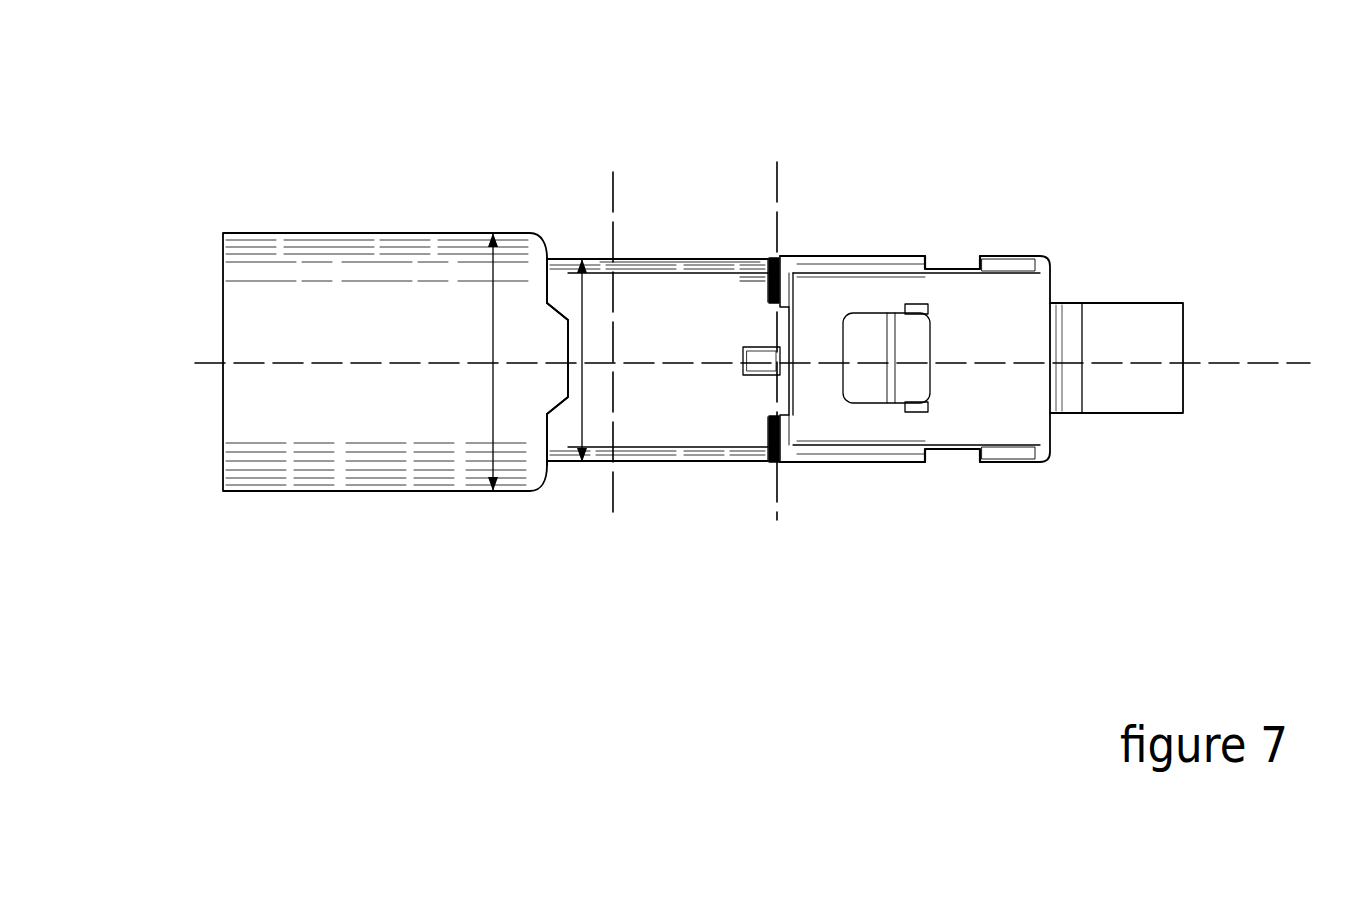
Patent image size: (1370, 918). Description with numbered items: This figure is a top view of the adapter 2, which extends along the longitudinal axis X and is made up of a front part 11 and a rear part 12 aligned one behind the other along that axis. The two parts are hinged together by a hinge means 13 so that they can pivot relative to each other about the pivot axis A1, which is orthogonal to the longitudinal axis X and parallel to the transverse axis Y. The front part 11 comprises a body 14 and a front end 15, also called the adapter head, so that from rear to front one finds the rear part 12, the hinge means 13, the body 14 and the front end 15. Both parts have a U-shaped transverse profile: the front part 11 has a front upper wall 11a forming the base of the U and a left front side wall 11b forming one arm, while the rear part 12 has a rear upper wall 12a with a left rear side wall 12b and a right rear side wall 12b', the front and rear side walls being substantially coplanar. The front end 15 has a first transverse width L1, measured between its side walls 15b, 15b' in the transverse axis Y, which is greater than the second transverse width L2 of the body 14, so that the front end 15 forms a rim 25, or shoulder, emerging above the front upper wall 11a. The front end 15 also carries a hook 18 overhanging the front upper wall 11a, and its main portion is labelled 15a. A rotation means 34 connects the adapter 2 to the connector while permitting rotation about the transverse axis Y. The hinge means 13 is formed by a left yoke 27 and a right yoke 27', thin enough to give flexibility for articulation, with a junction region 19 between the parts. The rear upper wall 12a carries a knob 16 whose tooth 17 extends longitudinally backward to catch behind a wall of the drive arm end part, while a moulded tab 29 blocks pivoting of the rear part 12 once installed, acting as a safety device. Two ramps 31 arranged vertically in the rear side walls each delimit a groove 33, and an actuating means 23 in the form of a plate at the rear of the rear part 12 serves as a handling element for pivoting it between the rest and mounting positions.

The adapter 2 is at (818, 537).
The front part 11 is at (532, 135).
The front upper wall 11a is at (704, 416).
The left front side wall 11b is at (655, 463).
The rear part 12 is at (898, 205).
The rear upper wall 12a is at (1020, 404).
The left rear side wall 12b is at (861, 501).
The right rear side wall 12b' is at (861, 185).
The hinge means 13 is at (757, 242).
The body 14 is at (585, 198).
The front end 15 is at (320, 190).
The sleeve main portion 15a is at (424, 336).
The front side wall of the front end 15b is at (378, 530).
The front side wall of the front end 15b' is at (378, 188).
The knob 16 is at (850, 313).
The tooth 17 is at (930, 350).
The hook 18 is at (568, 300).
The joint 19 is at (770, 257).
The actuating means 23 is at (1157, 303).
The rim 25 is at (543, 476).
The left yoke 27 is at (873, 404).
The right yoke 27' is at (716, 234).
The tab 29 is at (757, 376).
The ramp 31 is at (927, 264).
The groove 33 is at (966, 263).
The rotation means 34 is at (618, 302).
The pivot axis A1 is at (777, 327).
The longitudinal axis X is at (1242, 363).
The transverse axis Y is at (613, 331).
The first transverse width L1 is at (480, 362).
The second transverse width L2 is at (597, 360).